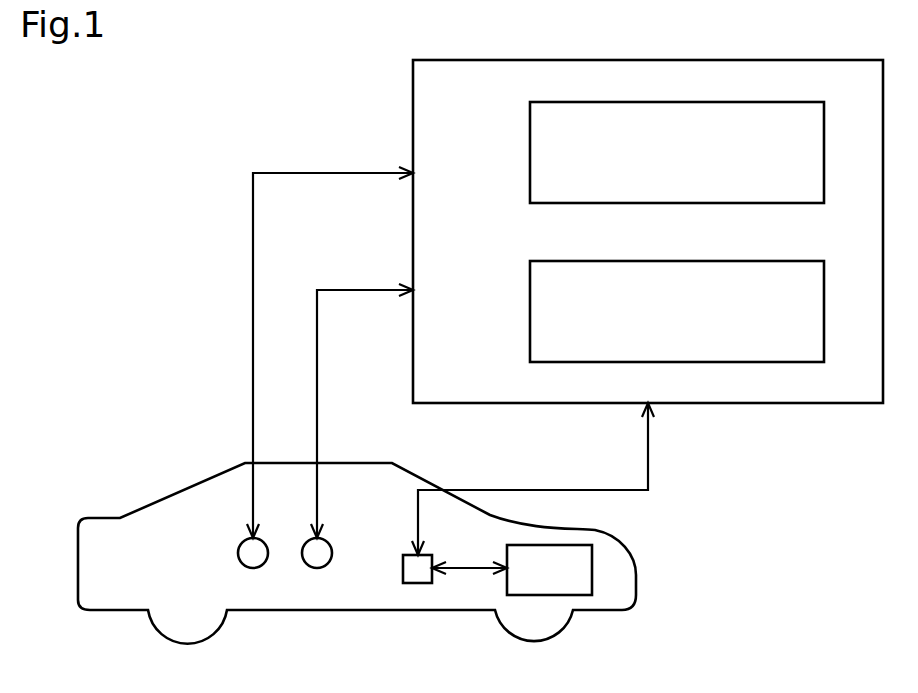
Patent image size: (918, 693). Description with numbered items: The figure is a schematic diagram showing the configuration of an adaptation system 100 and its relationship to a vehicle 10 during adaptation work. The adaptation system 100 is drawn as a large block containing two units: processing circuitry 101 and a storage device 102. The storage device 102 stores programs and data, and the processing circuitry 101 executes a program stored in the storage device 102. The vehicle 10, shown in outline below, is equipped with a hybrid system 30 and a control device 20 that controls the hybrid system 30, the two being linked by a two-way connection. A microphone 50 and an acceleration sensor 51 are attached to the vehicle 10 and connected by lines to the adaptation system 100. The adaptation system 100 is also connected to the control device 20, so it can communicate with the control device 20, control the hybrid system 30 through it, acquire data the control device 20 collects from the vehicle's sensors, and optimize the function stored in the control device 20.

The vehicle 10 is at (173, 494).
The control device 20 is at (417, 585).
The hybrid system 30 is at (593, 568).
The microphone 50 is at (253, 569).
The acceleration sensor 51 is at (317, 569).
The adaptation system 100 is at (413, 108).
The processing circuitry 101 is at (530, 152).
The storage device 102 is at (530, 310).